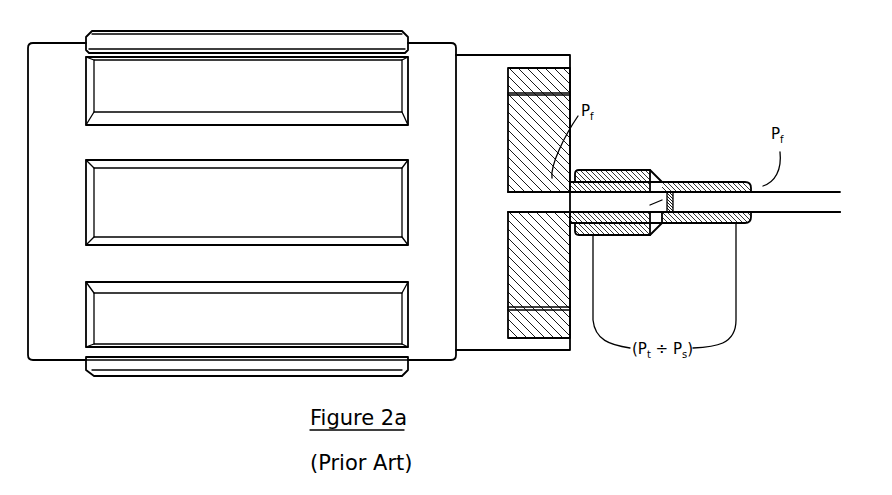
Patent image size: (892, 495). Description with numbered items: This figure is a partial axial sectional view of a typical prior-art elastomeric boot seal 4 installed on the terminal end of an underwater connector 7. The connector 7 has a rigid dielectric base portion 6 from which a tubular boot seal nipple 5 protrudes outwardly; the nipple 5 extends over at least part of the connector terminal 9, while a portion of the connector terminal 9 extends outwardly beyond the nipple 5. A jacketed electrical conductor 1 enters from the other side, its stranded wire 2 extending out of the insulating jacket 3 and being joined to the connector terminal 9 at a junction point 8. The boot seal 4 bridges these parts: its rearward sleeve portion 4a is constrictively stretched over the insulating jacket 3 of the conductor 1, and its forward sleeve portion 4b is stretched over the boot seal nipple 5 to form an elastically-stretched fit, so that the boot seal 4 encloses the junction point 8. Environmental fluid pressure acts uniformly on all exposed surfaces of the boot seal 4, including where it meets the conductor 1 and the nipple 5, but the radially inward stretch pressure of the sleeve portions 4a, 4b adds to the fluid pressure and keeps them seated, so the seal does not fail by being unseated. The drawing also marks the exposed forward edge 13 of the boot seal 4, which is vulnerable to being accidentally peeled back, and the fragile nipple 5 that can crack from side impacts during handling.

The jacketed electrical conductor 1 is at (808, 173).
The stranded wire 2 is at (672, 196).
The insulating jacket 3 is at (778, 213).
The boot seal 4 is at (612, 187).
The rearward sleeve portion 4a is at (702, 182).
The forward sleeve portion 4b is at (603, 171).
The boot seal nipple 5 is at (575, 223).
The base portion 6 is at (523, 128).
The underwater connector 7 is at (202, 327).
The junction point 8 is at (651, 170).
The connector terminal 9 is at (650, 205).
The exposed forward edge 13 is at (575, 226).